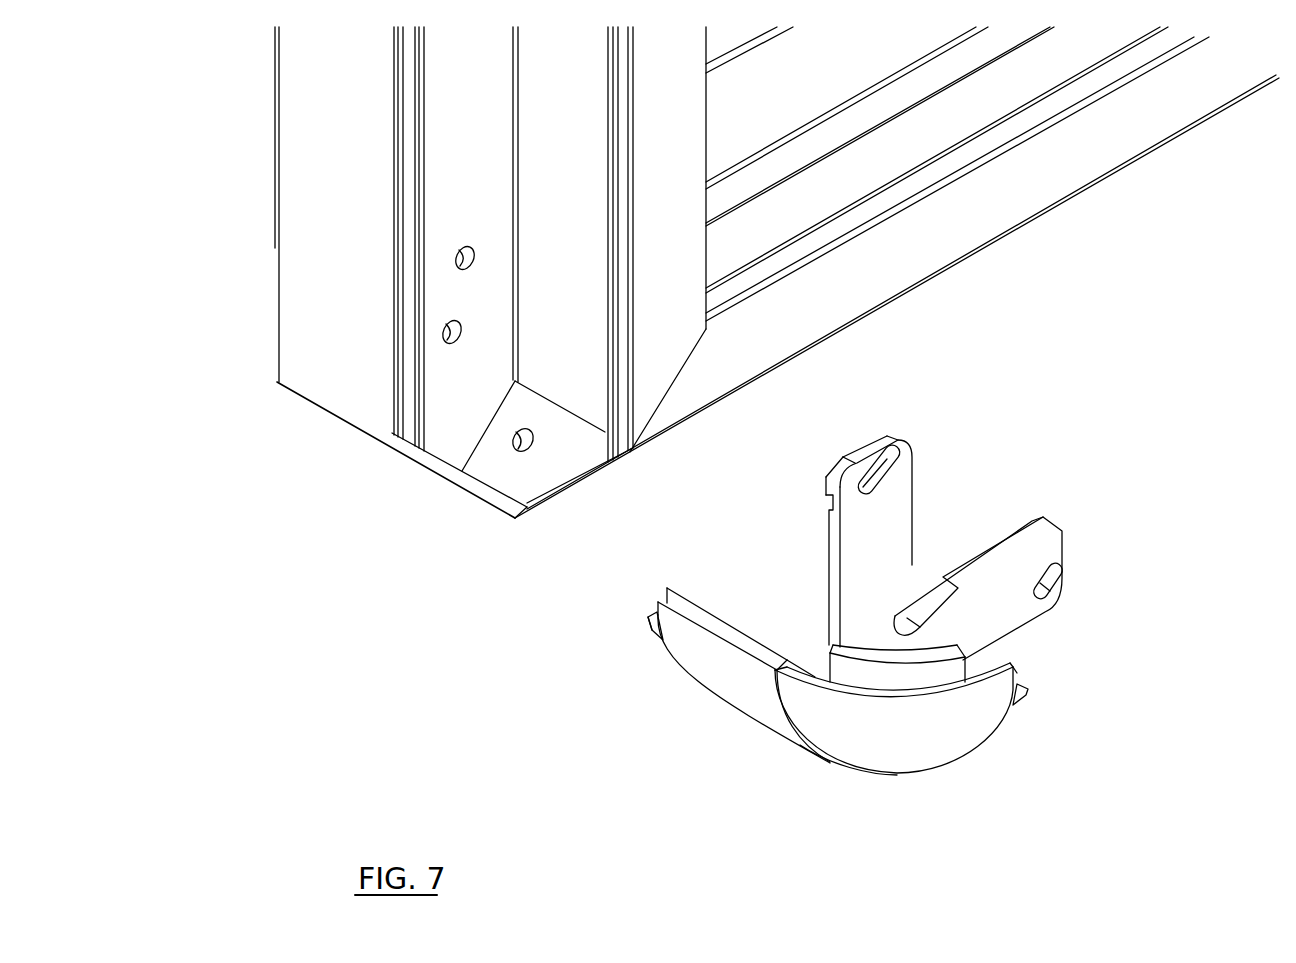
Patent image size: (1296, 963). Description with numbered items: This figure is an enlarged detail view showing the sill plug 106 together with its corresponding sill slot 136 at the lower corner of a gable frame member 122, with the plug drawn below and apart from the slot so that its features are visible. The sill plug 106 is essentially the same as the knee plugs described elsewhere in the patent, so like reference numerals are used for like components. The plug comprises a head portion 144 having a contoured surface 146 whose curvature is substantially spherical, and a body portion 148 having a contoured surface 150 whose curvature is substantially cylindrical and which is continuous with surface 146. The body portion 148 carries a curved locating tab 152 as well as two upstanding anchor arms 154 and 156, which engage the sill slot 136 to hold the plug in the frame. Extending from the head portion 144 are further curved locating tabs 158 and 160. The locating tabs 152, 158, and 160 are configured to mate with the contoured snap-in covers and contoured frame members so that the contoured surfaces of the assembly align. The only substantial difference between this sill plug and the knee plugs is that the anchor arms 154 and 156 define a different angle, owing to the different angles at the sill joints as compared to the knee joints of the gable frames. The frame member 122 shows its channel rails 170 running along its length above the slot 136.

The sill plug 106 is at (1045, 420).
The frame member 122 is at (248, 176).
The sill slot 136 is at (440, 508).
The head portion 144 is at (891, 799).
The contoured surface 146 is at (968, 730).
The body portion 148 is at (711, 717).
The contoured surface 150 is at (710, 658).
The curved locating tab 152 is at (650, 634).
The anchor arm 154 is at (827, 563).
The anchor arm 156 is at (1060, 592).
The curved locating tab 158 is at (865, 650).
The curved locating tab 160 is at (1027, 697).
The channel rails 170 is at (452, 62).